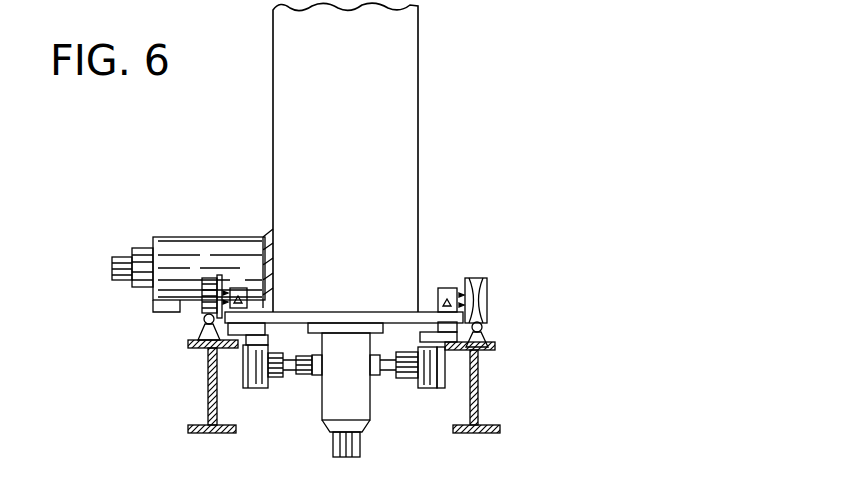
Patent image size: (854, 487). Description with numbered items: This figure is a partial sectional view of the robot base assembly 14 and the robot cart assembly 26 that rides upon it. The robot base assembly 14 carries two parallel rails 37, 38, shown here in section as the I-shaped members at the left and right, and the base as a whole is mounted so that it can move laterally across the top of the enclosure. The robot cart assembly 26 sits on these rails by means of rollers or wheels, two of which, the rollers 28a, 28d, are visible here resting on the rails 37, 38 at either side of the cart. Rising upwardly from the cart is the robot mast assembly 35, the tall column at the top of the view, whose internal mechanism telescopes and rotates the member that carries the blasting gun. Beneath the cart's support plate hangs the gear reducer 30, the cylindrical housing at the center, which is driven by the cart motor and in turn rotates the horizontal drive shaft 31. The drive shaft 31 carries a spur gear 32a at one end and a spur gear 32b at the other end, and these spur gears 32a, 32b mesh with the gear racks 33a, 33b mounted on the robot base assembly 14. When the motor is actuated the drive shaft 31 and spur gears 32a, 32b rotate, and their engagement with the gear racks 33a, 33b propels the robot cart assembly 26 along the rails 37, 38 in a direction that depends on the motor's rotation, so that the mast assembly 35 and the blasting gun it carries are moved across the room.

The robot mast assembly 35 is at (418, 80).
The robot cart assembly 26 is at (437, 212).
The gear rack 33a is at (252, 318).
The gear rack 33b is at (430, 323).
The roller 28a is at (482, 280).
The roller 28d is at (203, 320).
The rail 37 is at (486, 339).
The rail 38 is at (199, 333).
The robot base assembly 14 is at (208, 398).
The gear reducer 30 is at (360, 395).
The drive shaft 31 is at (302, 374).
The spur gear 32a is at (263, 389).
The spur gear 32b is at (430, 389).